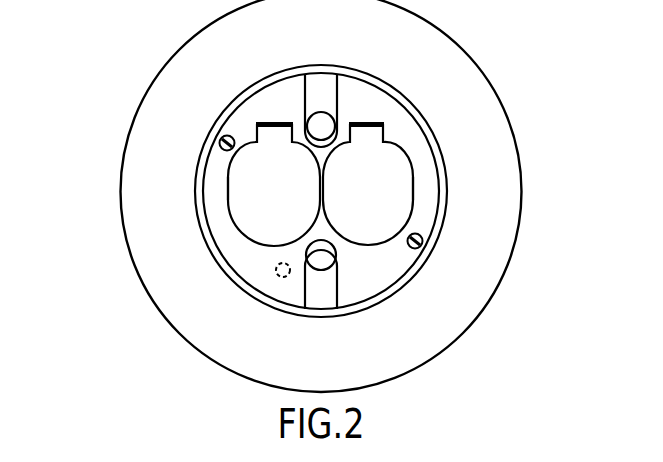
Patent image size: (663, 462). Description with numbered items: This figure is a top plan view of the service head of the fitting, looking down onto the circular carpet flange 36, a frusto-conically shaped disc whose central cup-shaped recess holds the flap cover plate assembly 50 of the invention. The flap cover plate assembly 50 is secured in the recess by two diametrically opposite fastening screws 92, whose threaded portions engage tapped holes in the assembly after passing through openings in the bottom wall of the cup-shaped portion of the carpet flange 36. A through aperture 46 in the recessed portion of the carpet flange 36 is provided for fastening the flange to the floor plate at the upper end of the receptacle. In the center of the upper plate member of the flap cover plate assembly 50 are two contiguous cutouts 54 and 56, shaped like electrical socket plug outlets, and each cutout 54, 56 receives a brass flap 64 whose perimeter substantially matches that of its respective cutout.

The carpet flange 36 is at (124, 146).
The flap cover plate assembly 50 is at (418, 150).
The cutout 54 is at (383, 200).
The cutout 56 is at (293, 200).
The flap 64 is at (237, 200).
The fastening screw 92 is at (220, 139).
The through aperture 46 is at (277, 274).